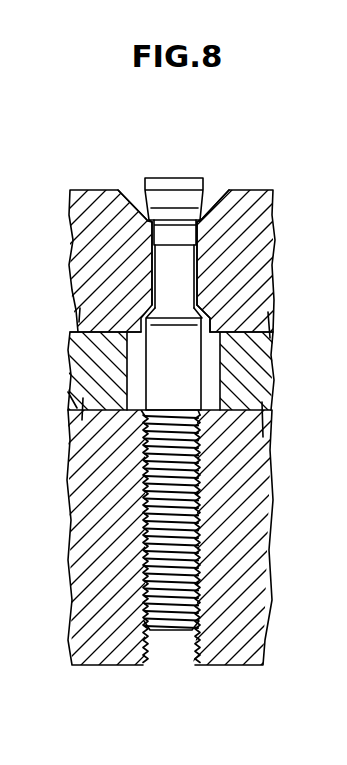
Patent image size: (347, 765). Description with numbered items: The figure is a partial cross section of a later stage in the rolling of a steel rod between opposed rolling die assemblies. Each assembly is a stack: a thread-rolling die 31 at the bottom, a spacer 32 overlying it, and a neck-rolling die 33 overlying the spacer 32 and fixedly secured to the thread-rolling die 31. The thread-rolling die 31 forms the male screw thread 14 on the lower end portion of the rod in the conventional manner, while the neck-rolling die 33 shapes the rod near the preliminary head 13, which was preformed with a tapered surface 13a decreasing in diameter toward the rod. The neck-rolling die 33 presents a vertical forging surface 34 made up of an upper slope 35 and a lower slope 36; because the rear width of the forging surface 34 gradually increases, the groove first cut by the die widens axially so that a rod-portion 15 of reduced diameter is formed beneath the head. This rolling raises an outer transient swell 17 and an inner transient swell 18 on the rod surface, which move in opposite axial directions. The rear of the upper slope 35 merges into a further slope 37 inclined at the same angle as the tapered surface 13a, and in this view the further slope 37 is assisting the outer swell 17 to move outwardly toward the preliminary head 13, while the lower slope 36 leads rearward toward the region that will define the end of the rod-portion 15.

The preliminary head 13 is at (172, 179).
The tapered surface 13a is at (203, 195).
The male screw thread 14 is at (163, 631).
The rod-portion of reduced diameter 15 is at (183, 262).
The outer transient swell 17 is at (200, 224).
The inner transient swell 18 is at (210, 308).
The thread-rolling die 31 is at (107, 652).
The spacer 32 is at (82, 398).
The neck-rolling die 33 is at (72, 190).
The vertical forging surface 34 is at (151, 274).
The upper slope 35 is at (140, 213).
The lower slope 36 is at (198, 342).
The further slope 37 is at (150, 233).